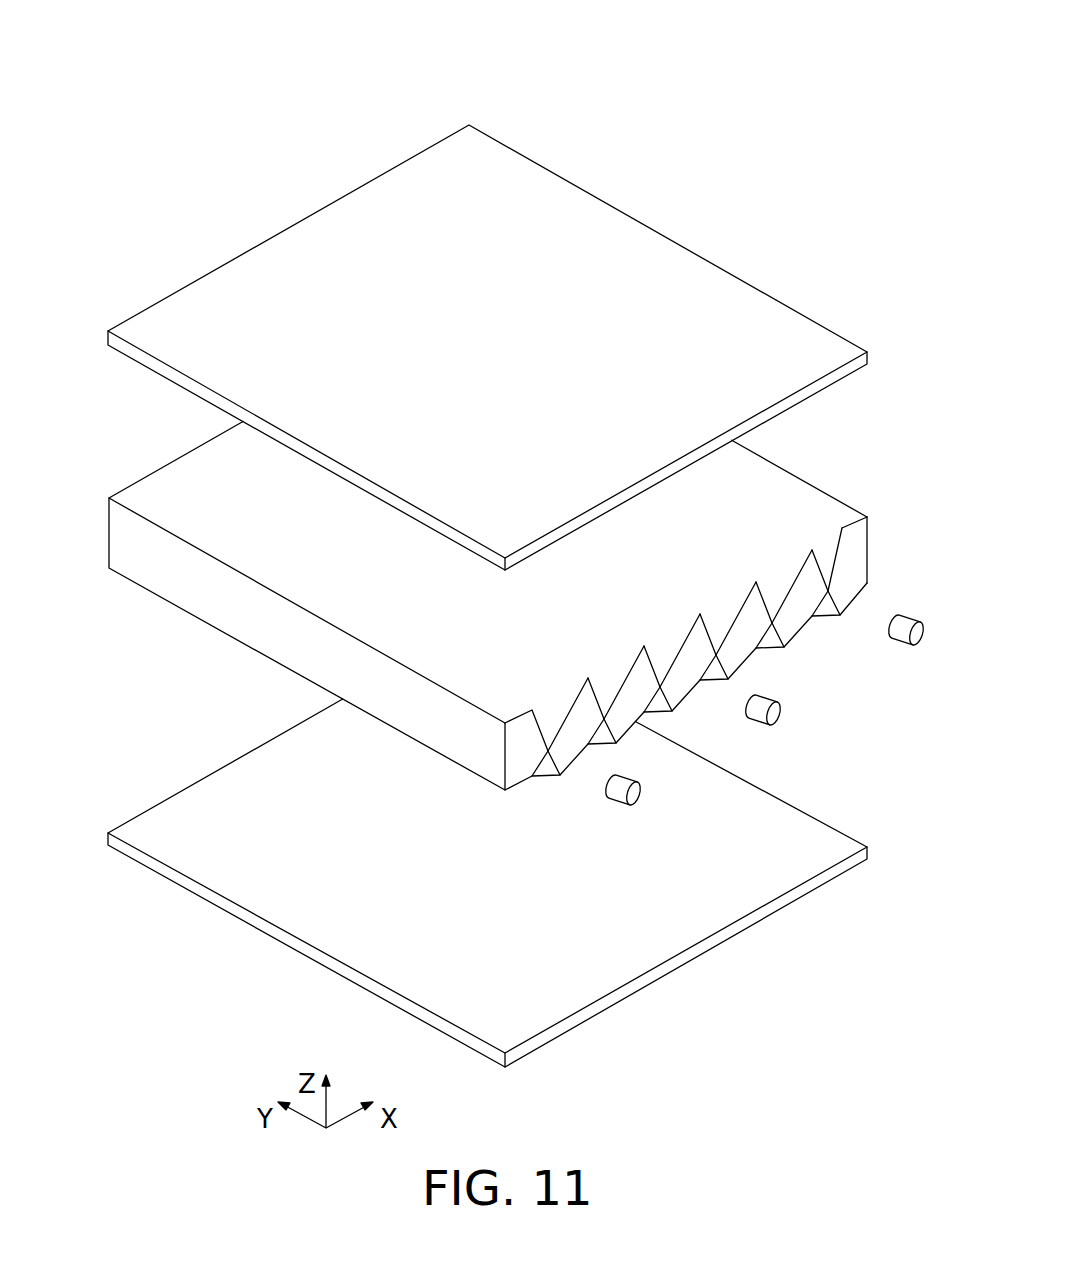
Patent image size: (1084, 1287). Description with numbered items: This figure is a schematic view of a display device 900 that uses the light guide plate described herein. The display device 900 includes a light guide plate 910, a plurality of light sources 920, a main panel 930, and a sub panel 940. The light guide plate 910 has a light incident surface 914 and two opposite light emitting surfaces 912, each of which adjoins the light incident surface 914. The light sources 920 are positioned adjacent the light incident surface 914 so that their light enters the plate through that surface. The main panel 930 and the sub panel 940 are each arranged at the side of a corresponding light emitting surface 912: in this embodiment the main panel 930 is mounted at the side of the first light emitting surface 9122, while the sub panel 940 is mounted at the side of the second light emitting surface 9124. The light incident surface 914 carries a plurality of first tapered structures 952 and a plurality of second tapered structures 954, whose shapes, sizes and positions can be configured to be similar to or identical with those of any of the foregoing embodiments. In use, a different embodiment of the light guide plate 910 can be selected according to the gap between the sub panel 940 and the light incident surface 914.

The display device 900 is at (386, 40).
The light guide plate 910 is at (807, 472).
The light emitting surfaces 912 is at (224, 747).
The first light emitting surface 9122 is at (227, 528).
The second light emitting surface 9124 is at (223, 635).
The light incident surface 914 is at (726, 653).
The first tapered structures 952 is at (825, 558).
The second tapered structures 954 is at (827, 607).
The light sources 920 is at (895, 638).
The main panel 930 is at (605, 248).
The sub panel 940 is at (313, 920).